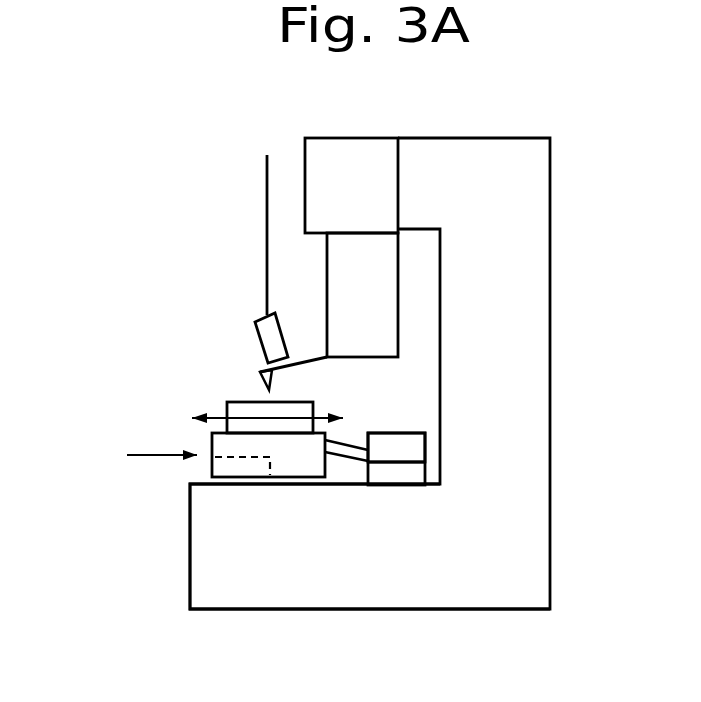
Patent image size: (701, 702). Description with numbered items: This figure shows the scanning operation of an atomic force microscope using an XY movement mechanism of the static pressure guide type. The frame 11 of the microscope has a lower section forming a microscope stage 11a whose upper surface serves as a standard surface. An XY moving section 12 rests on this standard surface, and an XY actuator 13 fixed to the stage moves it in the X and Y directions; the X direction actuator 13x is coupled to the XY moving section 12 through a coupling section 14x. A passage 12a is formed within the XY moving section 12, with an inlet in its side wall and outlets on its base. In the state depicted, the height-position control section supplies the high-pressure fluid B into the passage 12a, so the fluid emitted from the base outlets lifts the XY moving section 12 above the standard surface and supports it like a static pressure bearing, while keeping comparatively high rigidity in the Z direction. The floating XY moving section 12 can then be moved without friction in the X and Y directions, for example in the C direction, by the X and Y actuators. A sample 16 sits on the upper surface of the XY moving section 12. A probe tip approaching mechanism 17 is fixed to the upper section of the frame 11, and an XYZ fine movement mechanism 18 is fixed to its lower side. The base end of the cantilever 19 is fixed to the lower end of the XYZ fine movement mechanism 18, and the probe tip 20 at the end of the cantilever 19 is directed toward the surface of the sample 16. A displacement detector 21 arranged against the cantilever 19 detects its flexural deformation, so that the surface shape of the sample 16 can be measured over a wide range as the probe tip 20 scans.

The frame 11 is at (552, 535).
The microscope stage 11a is at (212, 597).
The XY moving section 12 is at (312, 467).
The passage 12a is at (243, 463).
The XY actuator 13 is at (402, 487).
The X direction actuator 13x is at (413, 448).
The coupling section 14x is at (348, 455).
The sample 16 is at (230, 408).
The probe tip approaching mechanism 17 is at (313, 170).
The XYZ fine movement mechanism 18 is at (390, 333).
The cantilever 19 is at (305, 362).
The probe tip 20 is at (260, 378).
The displacement detector 21 is at (267, 340).
The high-pressure fluid B is at (145, 455).
The C direction C is at (282, 422).